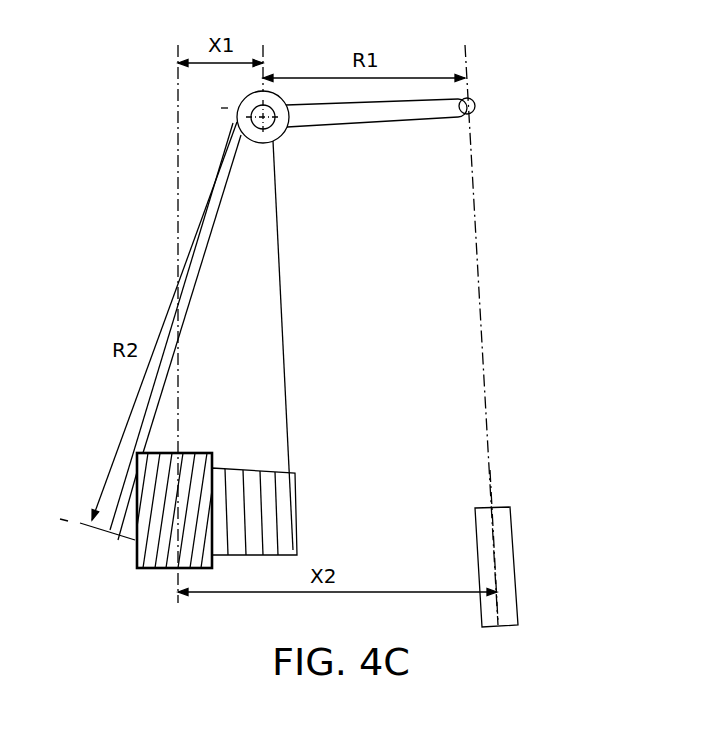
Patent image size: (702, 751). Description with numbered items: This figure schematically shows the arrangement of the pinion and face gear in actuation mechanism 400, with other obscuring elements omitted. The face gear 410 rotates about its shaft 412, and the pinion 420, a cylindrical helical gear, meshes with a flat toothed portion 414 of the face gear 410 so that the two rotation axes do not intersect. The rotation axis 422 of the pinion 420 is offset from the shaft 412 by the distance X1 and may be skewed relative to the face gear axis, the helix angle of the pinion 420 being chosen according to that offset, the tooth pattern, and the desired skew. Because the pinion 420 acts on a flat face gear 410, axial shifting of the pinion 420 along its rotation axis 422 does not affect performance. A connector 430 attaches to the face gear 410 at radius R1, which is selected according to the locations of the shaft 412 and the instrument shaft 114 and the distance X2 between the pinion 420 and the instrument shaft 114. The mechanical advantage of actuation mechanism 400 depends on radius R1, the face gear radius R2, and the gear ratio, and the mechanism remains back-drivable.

The actuation mechanism 400 is at (104, 26).
The face gear 410 is at (251, 399).
The shaft 412 is at (237, 118).
The toothed portion 414 is at (285, 518).
The pinion 420 is at (133, 550).
The rotation axis 422 is at (178, 243).
The connector 430 is at (473, 112).
The instrument shaft 114 is at (513, 552).